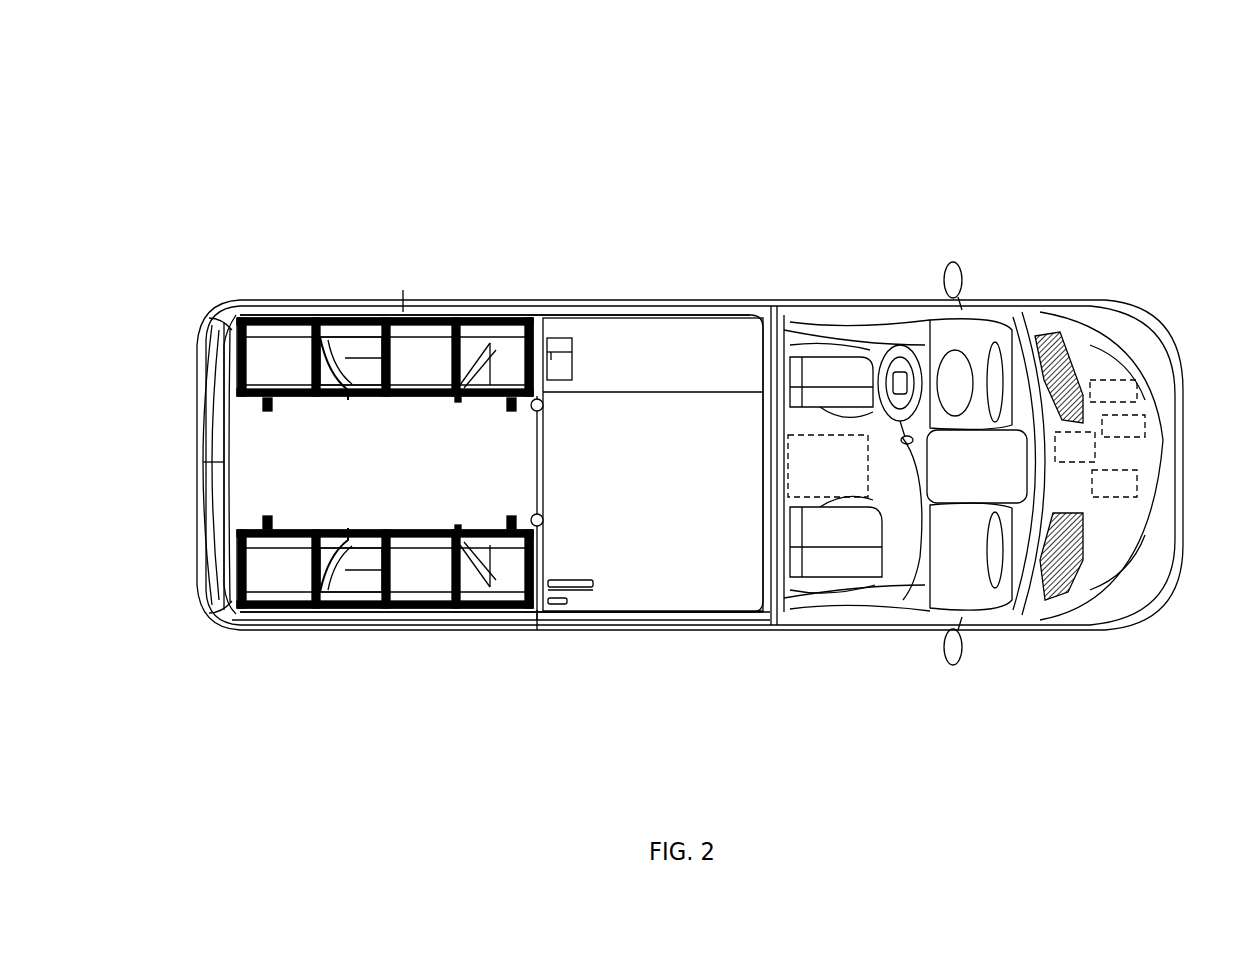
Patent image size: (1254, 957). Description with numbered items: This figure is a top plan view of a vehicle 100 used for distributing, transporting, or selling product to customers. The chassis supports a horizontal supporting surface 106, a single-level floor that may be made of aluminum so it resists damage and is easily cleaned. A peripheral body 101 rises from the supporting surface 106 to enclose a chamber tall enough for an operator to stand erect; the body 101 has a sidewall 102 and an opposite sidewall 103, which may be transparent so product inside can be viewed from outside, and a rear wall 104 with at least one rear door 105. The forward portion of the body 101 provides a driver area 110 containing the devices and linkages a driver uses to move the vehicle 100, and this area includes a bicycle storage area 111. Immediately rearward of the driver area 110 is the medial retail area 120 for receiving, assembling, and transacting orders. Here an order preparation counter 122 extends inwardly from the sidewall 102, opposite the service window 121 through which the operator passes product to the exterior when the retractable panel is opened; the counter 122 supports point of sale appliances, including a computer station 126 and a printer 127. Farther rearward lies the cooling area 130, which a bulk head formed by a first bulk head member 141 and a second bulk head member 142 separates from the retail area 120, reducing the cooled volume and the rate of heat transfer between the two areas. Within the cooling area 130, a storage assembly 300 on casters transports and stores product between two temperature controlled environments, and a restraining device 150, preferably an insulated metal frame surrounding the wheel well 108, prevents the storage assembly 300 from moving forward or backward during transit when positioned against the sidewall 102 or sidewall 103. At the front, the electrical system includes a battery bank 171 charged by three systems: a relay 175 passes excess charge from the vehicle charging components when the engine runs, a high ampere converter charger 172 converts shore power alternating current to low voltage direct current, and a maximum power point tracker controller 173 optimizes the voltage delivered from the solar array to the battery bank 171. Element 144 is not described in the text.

The vehicle 100 is at (777, 200).
The peripheral body 101 is at (664, 306).
The sidewall 102 is at (585, 312).
The sidewall 103 is at (418, 627).
The rear wall 104 is at (212, 323).
The rear door 105 is at (200, 424).
The horizontal supporting surface 106 is at (638, 497).
The wheel well 108 is at (362, 580).
The driver area 110 is at (882, 423).
The bicycle storage area 111 is at (817, 473).
The medial retail area 120 is at (689, 415).
The service window 121 is at (648, 625).
The order preparation counter 122 is at (645, 352).
The computer station 126 is at (598, 594).
The printer 127 is at (547, 350).
The cooling area 130 is at (337, 475).
The first bulk head member 141 is at (537, 338).
The second bulk head member 142 is at (537, 630).
The latch 144 is at (540, 470).
The restraining device 150 is at (326, 357).
The battery bank 171 is at (1083, 432).
The high ampere converter charger 172 is at (1118, 387).
The maximum power point tracker controller 173 is at (1117, 495).
The relay 175 is at (1137, 428).
The storage assembly 300 is at (272, 336).